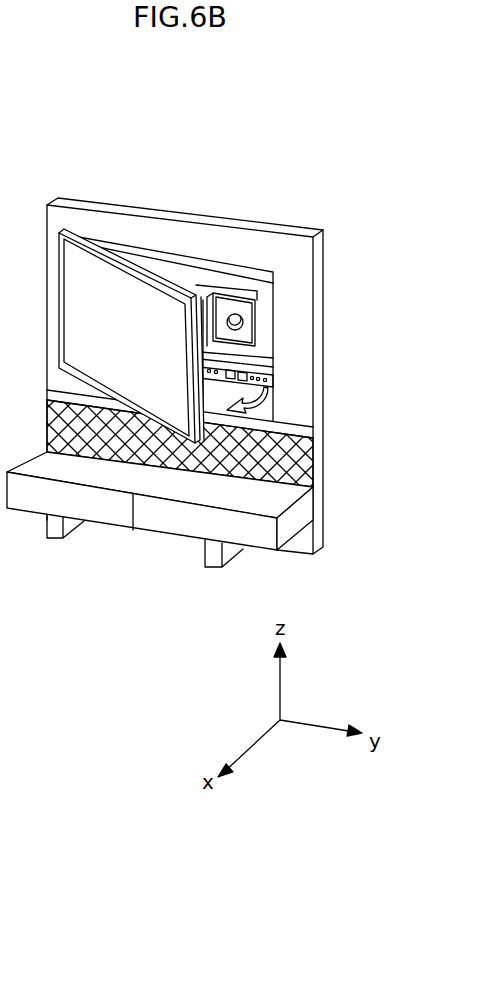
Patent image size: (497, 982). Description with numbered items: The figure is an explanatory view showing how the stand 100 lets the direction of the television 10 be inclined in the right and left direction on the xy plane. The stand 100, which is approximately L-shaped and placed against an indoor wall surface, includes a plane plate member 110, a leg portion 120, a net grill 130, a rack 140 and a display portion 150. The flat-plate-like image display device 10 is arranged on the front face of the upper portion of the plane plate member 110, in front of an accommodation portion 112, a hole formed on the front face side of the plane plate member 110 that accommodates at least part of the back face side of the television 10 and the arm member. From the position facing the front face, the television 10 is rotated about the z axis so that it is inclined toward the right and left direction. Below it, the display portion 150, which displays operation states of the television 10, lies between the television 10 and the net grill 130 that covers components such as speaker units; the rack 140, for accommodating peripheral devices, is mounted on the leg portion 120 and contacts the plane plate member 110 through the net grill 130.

The stand 100 is at (300, 140).
The image display device 10 is at (76, 288).
The plane plate member 110 is at (302, 270).
The accommodation portion 112 is at (215, 277).
The leg portion 120 is at (52, 540).
The net grill 130 is at (303, 468).
The rack 140 is at (302, 513).
The display portion 150 is at (305, 432).